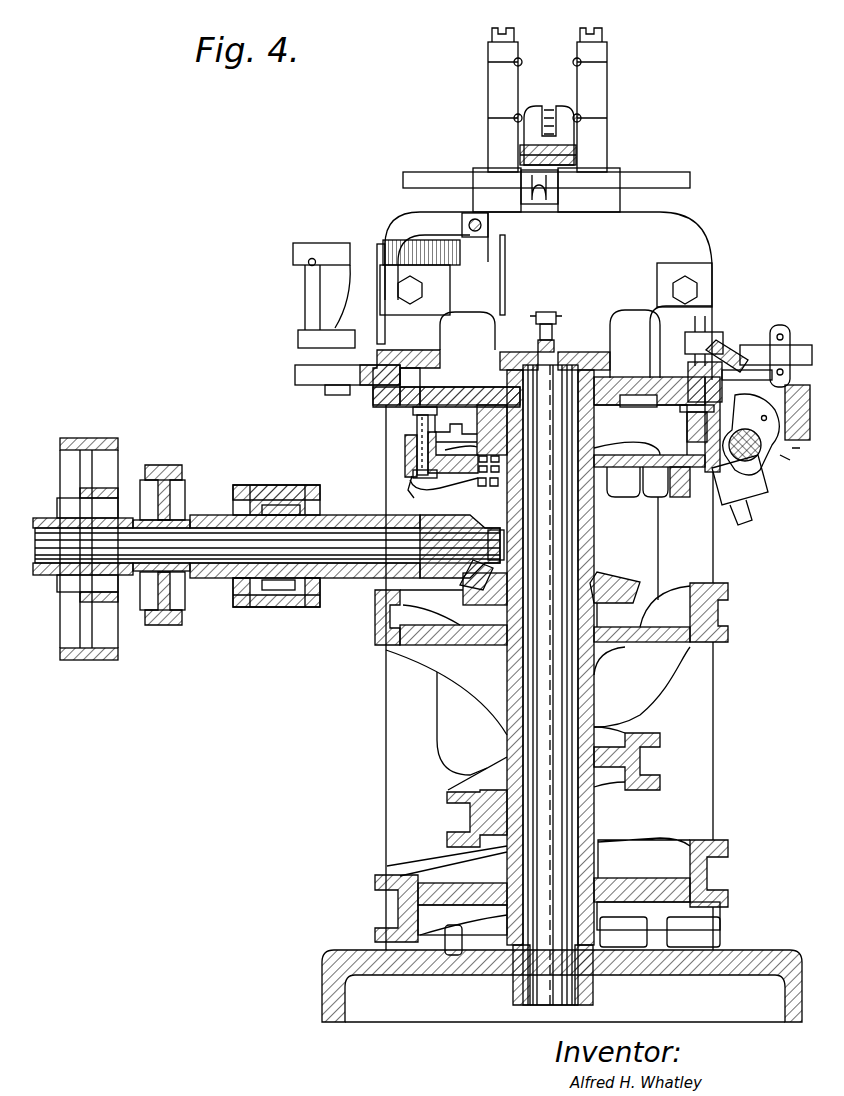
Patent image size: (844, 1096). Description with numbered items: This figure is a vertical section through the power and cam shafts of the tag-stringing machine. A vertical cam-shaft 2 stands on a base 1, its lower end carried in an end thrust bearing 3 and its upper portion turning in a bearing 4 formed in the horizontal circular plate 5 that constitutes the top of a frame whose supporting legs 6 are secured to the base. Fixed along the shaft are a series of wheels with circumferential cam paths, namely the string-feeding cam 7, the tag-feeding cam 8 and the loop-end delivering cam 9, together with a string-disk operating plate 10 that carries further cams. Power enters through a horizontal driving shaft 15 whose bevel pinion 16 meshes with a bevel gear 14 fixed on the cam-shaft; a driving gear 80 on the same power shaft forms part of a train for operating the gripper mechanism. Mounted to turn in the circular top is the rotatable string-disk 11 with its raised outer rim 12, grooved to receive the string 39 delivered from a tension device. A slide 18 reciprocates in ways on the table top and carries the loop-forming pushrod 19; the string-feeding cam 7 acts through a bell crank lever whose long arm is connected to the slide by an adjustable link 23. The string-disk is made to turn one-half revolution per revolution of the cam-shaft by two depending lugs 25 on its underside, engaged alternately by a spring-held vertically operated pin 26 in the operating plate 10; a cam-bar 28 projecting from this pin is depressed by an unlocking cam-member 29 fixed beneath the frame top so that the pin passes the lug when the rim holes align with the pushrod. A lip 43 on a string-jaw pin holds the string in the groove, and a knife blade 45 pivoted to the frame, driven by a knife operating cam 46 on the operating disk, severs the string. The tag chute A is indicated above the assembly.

The tag chute A is at (546, 115).
The base 1 is at (325, 972).
The vertical cam-shaft 2 is at (580, 546).
The end thrust bearing 3 is at (520, 962).
The bearing 4 is at (532, 432).
The horizontal circular plate 5 is at (622, 378).
The supporting legs 6 is at (384, 724).
The string-feeding cam 7 is at (732, 850).
The tag-feeding cam 8 is at (660, 780).
The loop-end delivering cam 9 is at (722, 612).
The string-disk operating plate 10 is at (628, 466).
The rotatable string-disk 11 is at (410, 394).
The raised outer rim 12 is at (392, 362).
The bevel gear 14 is at (620, 578).
The driving shaft 15 is at (346, 540).
The bevel pinion 16 is at (480, 478).
The slide 18 is at (572, 352).
The loop-forming pushrod 19 is at (524, 352).
The link 23 is at (546, 316).
The depending lugs 25 is at (412, 420).
The vertically operated pin 26 is at (404, 450).
The cam-bar 28 is at (455, 446).
The unlocking cam-member 29 is at (462, 386).
The string 39 is at (300, 374).
The lip 43 is at (716, 342).
The knife blade 45 is at (760, 356).
The knife operating cam 46 is at (702, 496).
The driving gear 80 is at (275, 590).